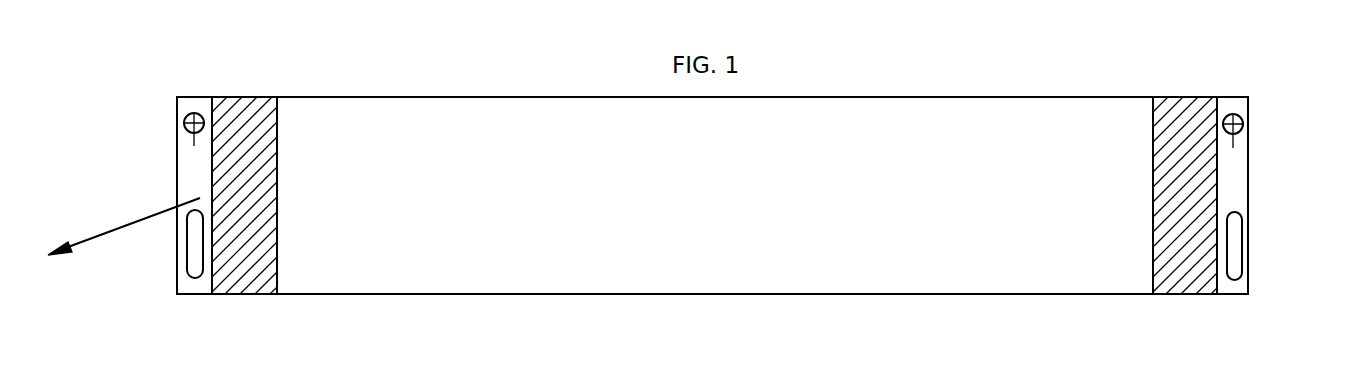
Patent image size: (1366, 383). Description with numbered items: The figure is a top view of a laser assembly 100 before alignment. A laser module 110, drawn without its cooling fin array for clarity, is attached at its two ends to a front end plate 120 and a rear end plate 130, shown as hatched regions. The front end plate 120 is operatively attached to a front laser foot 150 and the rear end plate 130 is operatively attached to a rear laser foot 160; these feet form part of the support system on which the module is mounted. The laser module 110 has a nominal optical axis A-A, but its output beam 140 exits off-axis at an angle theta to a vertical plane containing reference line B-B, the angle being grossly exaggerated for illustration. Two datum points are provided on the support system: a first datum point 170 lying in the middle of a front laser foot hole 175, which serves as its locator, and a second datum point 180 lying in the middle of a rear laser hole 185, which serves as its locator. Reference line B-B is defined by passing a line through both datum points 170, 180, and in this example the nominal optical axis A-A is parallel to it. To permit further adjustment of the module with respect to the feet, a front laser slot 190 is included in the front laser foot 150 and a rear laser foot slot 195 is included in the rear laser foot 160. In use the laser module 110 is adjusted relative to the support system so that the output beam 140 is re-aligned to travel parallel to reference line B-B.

The laser assembly 100 is at (237, 53).
The laser module 110 is at (945, 95).
The front end plate 120 is at (245, 97).
The rear end plate 130 is at (1186, 97).
The output beam 140 is at (141, 222).
The front laser foot 150 is at (182, 295).
The rear laser foot 160 is at (1243, 297).
The first datum point 170 is at (185, 121).
The front laser foot hole 175 is at (201, 138).
The second datum point 180 is at (1233, 115).
The rear laser hole 185 is at (1238, 137).
The front laser slot 190 is at (188, 252).
The rear laser foot slot 195 is at (1243, 268).